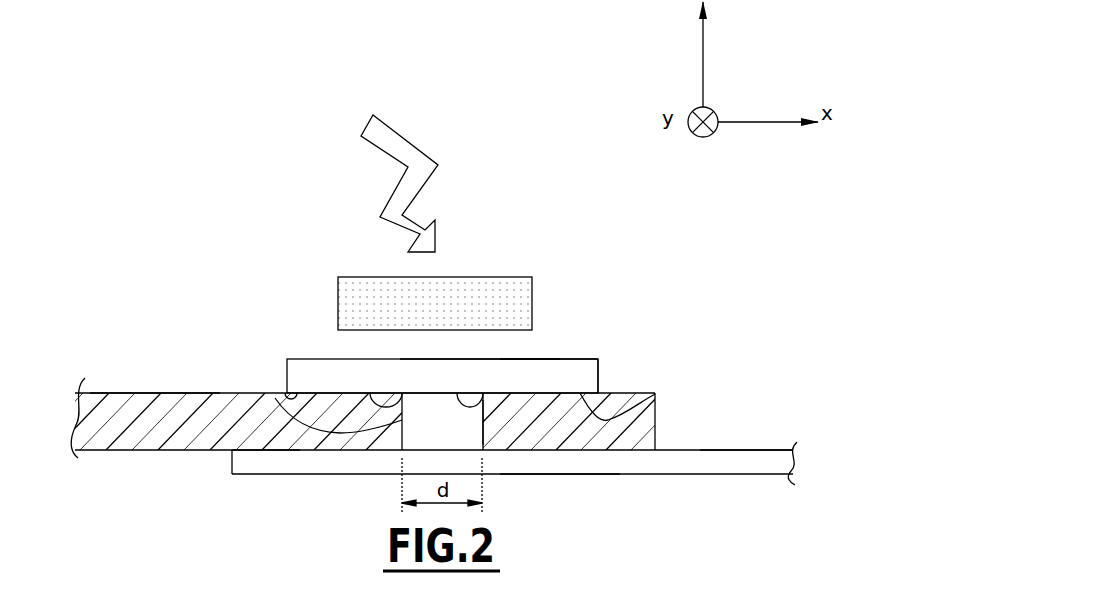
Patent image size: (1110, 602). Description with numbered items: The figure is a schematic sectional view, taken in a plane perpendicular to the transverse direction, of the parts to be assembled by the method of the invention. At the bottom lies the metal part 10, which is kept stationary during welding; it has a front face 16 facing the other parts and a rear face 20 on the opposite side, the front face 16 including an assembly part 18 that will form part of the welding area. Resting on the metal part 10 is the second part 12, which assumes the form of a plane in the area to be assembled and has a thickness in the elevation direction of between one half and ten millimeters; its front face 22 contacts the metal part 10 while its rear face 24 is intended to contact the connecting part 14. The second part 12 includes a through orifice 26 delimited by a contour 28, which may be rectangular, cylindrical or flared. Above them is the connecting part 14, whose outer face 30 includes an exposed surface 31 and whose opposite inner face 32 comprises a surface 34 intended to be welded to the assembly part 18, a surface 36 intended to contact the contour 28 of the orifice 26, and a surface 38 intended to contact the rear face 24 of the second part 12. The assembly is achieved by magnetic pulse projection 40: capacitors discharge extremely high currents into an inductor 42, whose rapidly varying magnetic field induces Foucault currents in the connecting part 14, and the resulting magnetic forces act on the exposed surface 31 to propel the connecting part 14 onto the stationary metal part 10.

The metal part 10 is at (800, 457).
The second part 12 is at (667, 427).
The connecting part 14 is at (613, 377).
The front face 16 is at (748, 450).
The assembly part 18 is at (432, 450).
The rear face 20 is at (557, 475).
The front face 22 is at (262, 452).
The rear face 24 is at (150, 393).
The through orifice 26 is at (460, 433).
The contour 28 is at (275, 398).
The outer face 30 is at (287, 359).
The exposed surface 31 is at (490, 358).
The inner face 32 is at (287, 393).
The surface 34 is at (483, 393).
The surface 36 is at (370, 393).
The surface 38 is at (655, 393).
The magnetic pulse projection 40 is at (512, 213).
The inductor 42 is at (337, 277).